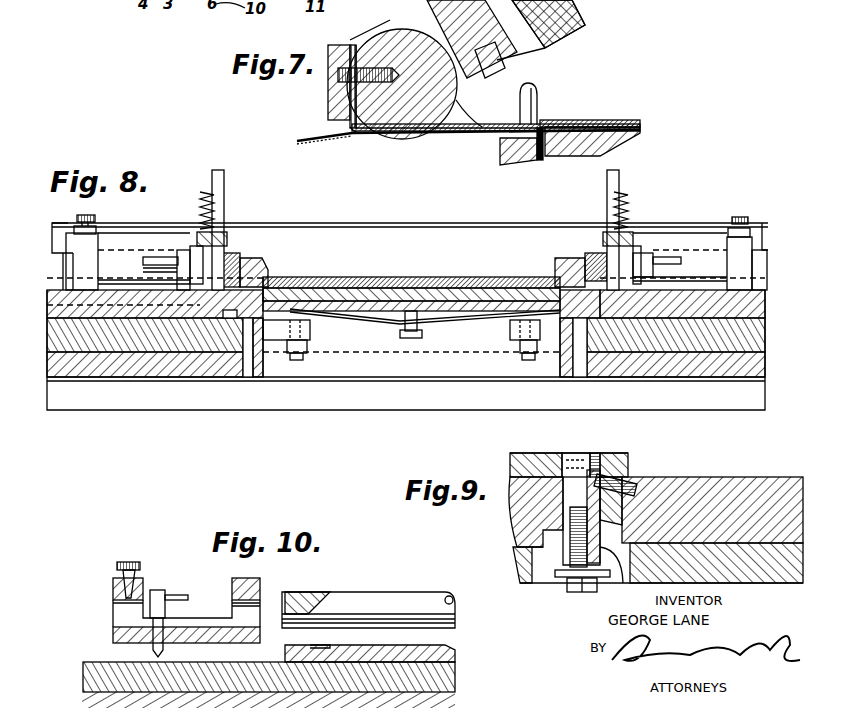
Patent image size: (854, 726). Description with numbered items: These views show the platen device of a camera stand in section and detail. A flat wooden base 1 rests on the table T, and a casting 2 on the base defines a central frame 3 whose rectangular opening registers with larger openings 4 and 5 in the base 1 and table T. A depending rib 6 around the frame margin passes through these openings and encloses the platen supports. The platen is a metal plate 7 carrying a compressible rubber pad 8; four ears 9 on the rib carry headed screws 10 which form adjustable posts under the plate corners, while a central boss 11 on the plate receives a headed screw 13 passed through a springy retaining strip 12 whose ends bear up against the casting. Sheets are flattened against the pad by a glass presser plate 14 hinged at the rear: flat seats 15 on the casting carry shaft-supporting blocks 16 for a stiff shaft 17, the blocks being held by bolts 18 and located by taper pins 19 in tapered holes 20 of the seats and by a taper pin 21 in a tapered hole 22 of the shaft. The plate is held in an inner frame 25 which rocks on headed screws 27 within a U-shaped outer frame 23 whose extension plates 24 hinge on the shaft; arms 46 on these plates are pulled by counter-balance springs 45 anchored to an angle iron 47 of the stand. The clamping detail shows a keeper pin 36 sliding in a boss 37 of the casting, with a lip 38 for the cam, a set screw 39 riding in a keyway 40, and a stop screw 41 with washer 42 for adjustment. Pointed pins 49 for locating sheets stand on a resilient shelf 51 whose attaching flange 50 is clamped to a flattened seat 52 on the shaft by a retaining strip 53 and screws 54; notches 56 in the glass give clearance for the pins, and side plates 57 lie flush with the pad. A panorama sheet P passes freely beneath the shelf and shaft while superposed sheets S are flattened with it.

In FIG. 8, the base 1 is at (125, 353).
In FIG. 9, the base 1 is at (752, 487).
In FIG. 10, the base 1 is at (452, 674).
In FIG. 8, the casting 2 is at (237, 330).
In FIG. 9, the casting 2 is at (522, 452).
In FIG. 10, the casting 2 is at (452, 653).
In FIG. 7, the central frame 3 is at (500, 151).
In FIG. 8, the central frame 3 is at (268, 283).
In FIG. 8, the opening in base 4 is at (247, 350).
In FIG. 8, the opening in table 5 is at (256, 358).
In FIG. 8, the depending rib 6 is at (283, 368).
In FIG. 8, the metal plate 7 is at (338, 304).
In FIG. 7, the rubber pad 8 is at (615, 150).
In FIG. 8, the rubber pad 8 is at (330, 292).
In FIG. 8, the ears 9 is at (311, 335).
In FIG. 8, the headed screws 10 is at (306, 351).
In FIG. 8, the central boss 11 is at (424, 312).
In FIG. 8, the retaining strip 12 is at (450, 338).
In FIG. 8, the headed screw 13 is at (405, 338).
In FIG. 7, the presser plate 14 is at (575, 30).
In FIG. 8, the presser plate 14 is at (463, 288).
In FIG. 8, the seats 15 is at (62, 350).
In FIG. 10, the seats 15 is at (398, 630).
In FIG. 8, the shaft-supporting blocks 16 is at (92, 291).
In FIG. 10, the shaft-supporting blocks 16 is at (183, 626).
In FIG. 7, the shaft 17 is at (392, 118).
In FIG. 8, the shaft 17 is at (118, 256).
In FIG. 10, the shaft 17 is at (365, 600).
In FIG. 8, the bolts 18 is at (66, 243).
In FIG. 8, the taper pins 19 is at (180, 246).
In FIG. 10, the taper pins 19 is at (158, 600).
In FIG. 10, the tapered holes 20 is at (330, 660).
In FIG. 8, the taper pin 21 is at (85, 218).
In FIG. 10, the taper pin 21 is at (117, 566).
In FIG. 10, the tapered hole 22 is at (305, 600).
In FIG. 8, the outer frame 23 is at (232, 266).
In FIG. 7, the extension plates 24 is at (458, 88).
In FIG. 7, the frame 25 is at (503, 60).
In FIG. 8, the frame 25 is at (262, 278).
In FIG. 8, the headed screws 27 is at (205, 250).
In FIG. 9, the keeper pin 36 is at (607, 456).
In FIG. 9, the boss 37 is at (510, 515).
In FIG. 9, the lip 38 is at (575, 462).
In FIG. 9, the set screw 39 is at (637, 484).
In FIG. 9, the keyway 40 is at (600, 555).
In FIG. 9, the stop screw 41 is at (572, 592).
In FIG. 9, the washer 42 is at (556, 575).
In FIG. 8, the counter-balance springs 45 is at (212, 200).
In FIG. 8, the arms 46 is at (226, 185).
In FIG. 8, the angle iron 47 is at (438, 228).
In FIG. 7, the pointed pins 49 is at (537, 97).
In FIG. 7, the attaching flange 50 is at (328, 102).
In FIG. 7, the shelf 51 is at (450, 131).
In FIG. 7, the seat 52 is at (352, 70).
In FIG. 7, the retaining strip 53 is at (330, 115).
In FIG. 8, the retaining strip 53 is at (531, 191).
In FIG. 7, the screws 54 is at (338, 80).
In FIG. 7, the notches 56 is at (553, 40).
In FIG. 8, the notches 56 is at (406, 290).
In FIG. 8, the plates 57 is at (72, 312).
In FIG. 7, the panorama sheet P is at (335, 142).
In FIG. 7, the sheets S is at (628, 98).
In FIG. 8, the sheets S is at (358, 287).
In FIG. 9, the table T is at (520, 568).
In FIG. 10, the table T is at (455, 693).